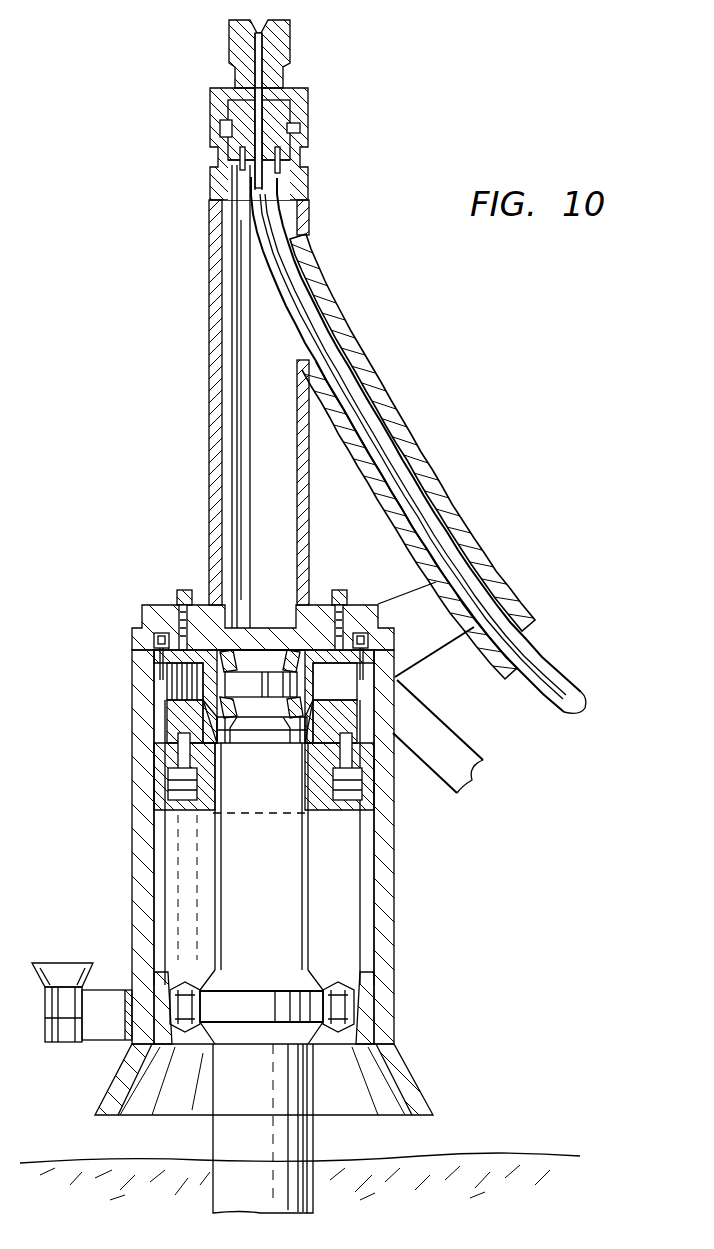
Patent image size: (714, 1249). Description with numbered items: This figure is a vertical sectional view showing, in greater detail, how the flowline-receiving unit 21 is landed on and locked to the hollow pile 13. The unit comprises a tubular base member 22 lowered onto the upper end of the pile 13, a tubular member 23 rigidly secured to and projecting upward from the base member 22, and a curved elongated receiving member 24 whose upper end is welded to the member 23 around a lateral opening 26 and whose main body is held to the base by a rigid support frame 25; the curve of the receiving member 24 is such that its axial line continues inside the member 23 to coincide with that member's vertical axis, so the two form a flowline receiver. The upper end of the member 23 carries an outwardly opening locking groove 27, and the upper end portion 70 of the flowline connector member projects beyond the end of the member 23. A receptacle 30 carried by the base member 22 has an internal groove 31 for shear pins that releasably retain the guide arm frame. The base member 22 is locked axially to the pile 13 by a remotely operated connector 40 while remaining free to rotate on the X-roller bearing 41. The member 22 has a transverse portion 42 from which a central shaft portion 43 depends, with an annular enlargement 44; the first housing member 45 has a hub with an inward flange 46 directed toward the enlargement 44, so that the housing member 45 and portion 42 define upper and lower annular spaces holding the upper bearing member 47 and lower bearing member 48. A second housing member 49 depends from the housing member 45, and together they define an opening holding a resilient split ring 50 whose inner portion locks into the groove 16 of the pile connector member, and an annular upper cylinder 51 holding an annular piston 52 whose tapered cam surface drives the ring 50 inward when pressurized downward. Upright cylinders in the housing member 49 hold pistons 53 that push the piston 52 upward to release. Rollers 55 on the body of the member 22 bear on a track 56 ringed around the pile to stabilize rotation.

The hollow pile 13 is at (315, 1143).
The locking groove 16 is at (250, 978).
The flowline-receiving unit 21 is at (415, 410).
The tubular base member 22 is at (394, 947).
The tubular member 23 is at (209, 438).
The elongated receiving member 24 is at (484, 542).
The rigid support frame 25 is at (485, 768).
The lateral opening 26 is at (287, 323).
The locking groove 27 is at (308, 162).
The receptacle 30 is at (62, 965).
The internal groove 31 is at (63, 1045).
The remotely operated connector 40 is at (150, 793).
The X-roller bearing 41 is at (243, 642).
The transverse portion 42 is at (322, 605).
The shaft portion 43 is at (264, 660).
The annular enlargement 44 is at (335, 681).
The first housing member 45 is at (154, 640).
The inwardly projecting flange 46 is at (187, 680).
The upper bearing member 47 is at (261, 687).
The lower bearing member 48 is at (288, 702).
The second housing member 49 is at (190, 752).
The split ring 50 is at (253, 727).
The annular upper cylinder 51 is at (167, 700).
The annular piston 52 is at (182, 715).
The piston 53 is at (185, 810).
The rollers 55 is at (187, 1010).
The track 56 is at (312, 1000).
The upper end portion 70 is at (290, 50).